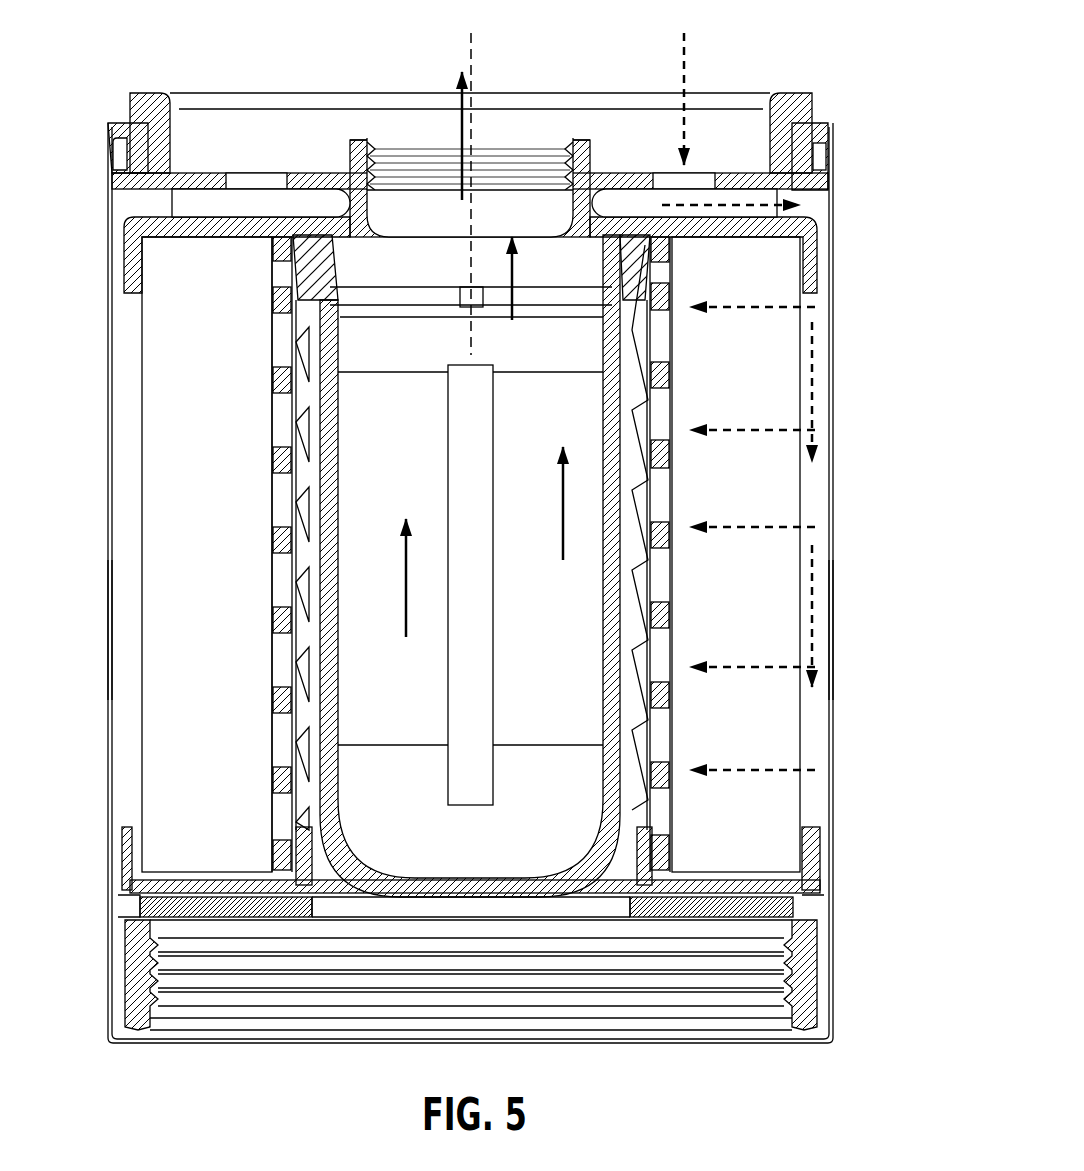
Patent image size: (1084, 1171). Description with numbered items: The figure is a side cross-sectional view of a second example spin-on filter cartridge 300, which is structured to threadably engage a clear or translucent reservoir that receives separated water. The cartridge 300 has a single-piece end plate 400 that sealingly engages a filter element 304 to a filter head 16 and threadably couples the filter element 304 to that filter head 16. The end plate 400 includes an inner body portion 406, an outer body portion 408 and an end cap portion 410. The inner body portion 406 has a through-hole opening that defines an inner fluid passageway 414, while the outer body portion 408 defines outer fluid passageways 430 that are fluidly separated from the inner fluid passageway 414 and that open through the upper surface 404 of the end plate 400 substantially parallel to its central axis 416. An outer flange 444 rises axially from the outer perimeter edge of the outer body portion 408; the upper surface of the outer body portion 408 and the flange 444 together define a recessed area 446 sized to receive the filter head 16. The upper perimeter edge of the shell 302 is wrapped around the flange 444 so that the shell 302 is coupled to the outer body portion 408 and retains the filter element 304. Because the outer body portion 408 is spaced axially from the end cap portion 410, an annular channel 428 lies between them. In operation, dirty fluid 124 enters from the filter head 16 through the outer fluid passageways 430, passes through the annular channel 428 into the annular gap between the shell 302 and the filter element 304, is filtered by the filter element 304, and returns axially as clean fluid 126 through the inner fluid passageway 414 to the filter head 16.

The filter head 16 is at (482, 97).
The dirty fluid 124 is at (712, 60).
The clean fluid 126 is at (570, 510).
The spin-on filter cartridge 300 is at (870, 380).
The shell 302 is at (834, 622).
The filter element 304 is at (758, 797).
The end plate 400 is at (492, 235).
The upper surface 404 is at (243, 214).
The inner body portion 406 is at (580, 156).
The outer body portion 408 is at (816, 196).
The end cap portion 410 is at (764, 240).
The inner fluid passageway 414 is at (421, 290).
The central axis 416 is at (474, 132).
The annular channel 428 is at (470, 108).
The outer fluid passageways 430 is at (262, 172).
The outer flange 444 is at (112, 128).
The recessed area 446 is at (398, 100).